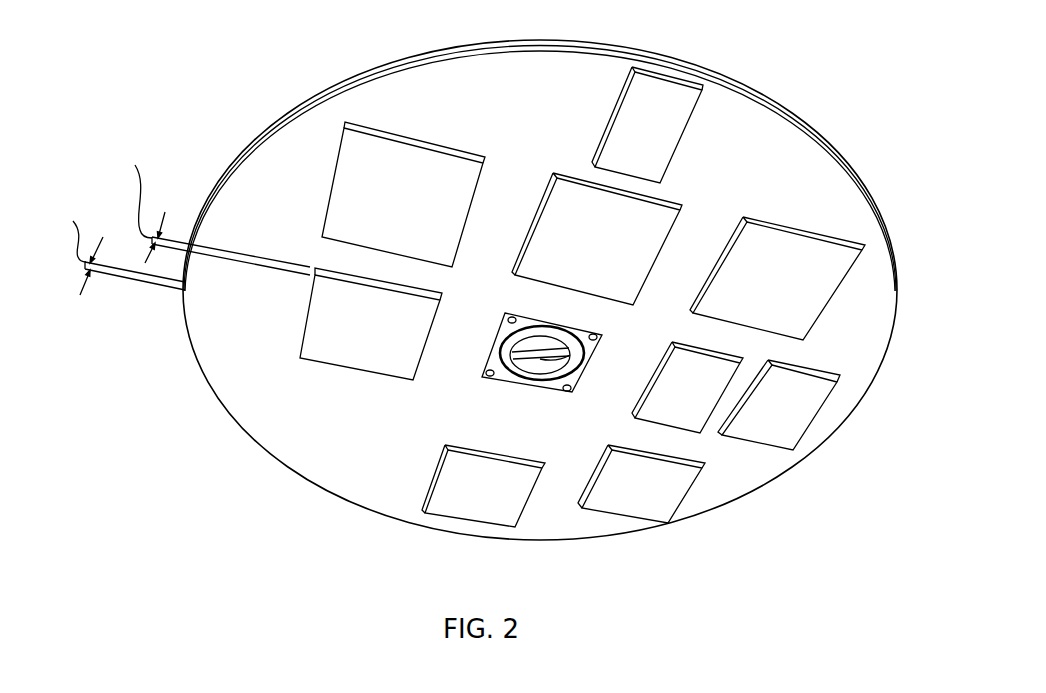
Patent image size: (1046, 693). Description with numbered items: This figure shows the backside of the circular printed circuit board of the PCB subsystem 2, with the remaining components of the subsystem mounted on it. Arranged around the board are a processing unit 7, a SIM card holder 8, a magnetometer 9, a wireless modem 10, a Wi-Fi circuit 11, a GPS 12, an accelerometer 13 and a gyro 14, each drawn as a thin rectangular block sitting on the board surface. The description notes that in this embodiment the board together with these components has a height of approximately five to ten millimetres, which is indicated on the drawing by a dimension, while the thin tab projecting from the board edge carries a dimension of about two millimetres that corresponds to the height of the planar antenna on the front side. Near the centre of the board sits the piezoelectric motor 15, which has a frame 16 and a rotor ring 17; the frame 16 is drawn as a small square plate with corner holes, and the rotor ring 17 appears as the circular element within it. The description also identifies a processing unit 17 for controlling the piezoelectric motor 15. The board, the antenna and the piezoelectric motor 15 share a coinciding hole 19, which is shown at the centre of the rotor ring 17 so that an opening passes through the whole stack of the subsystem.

The PCB subsystem 2 is at (795, 46).
The processing unit 7 is at (770, 301).
The SIM card holder 8 is at (642, 139).
The magnetometer 9 is at (637, 499).
The wireless modem 10 is at (582, 256).
The Wi-Fi circuit 11 is at (467, 499).
The GPS 12 is at (353, 341).
The accelerometer 13 is at (670, 397).
The gyro 14 is at (763, 417).
The piezoelectric motor 15 is at (549, 353).
The frame 16 is at (506, 323).
The rotor ring 17 is at (385, 209).
The coinciding hole 19 is at (542, 352).